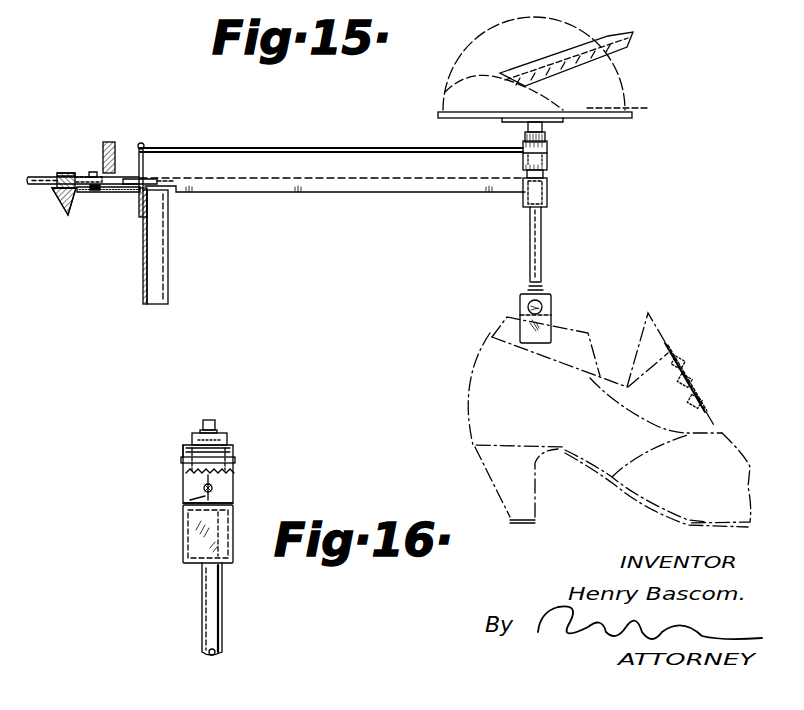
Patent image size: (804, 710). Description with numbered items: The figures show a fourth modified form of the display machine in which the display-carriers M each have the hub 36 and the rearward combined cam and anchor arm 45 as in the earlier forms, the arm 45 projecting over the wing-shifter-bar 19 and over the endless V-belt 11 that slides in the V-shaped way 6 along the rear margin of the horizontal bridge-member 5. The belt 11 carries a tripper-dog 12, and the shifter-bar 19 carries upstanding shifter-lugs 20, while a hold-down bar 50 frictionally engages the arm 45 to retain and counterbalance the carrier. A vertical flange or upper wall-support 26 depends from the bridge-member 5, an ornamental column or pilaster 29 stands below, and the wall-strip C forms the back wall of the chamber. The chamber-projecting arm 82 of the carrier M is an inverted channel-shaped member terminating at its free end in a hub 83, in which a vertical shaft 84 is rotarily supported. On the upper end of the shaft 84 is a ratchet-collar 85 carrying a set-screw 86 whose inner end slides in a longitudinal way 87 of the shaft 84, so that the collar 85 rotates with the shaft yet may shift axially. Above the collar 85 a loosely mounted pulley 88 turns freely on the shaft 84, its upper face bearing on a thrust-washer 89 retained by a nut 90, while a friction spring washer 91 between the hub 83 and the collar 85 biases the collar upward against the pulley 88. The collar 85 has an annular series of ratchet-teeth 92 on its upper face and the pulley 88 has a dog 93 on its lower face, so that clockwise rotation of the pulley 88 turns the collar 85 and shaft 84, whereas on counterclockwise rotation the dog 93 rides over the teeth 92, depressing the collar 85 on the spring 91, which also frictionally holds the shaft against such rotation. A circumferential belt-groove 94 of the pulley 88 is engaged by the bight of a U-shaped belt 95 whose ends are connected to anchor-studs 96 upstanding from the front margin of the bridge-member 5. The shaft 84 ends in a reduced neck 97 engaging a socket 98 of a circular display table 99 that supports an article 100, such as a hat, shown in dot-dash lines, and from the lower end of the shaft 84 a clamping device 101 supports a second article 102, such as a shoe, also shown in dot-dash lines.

In FIG. 15, the carrier-support or bridge-member 5 is at (122, 193).
In FIG. 15, the V-shaped way or channel 6 is at (68, 213).
In FIG. 15, the endless V-belt 11 is at (60, 196).
In FIG. 15, the dog or tripper-member 12 is at (74, 175).
In FIG. 15, the wing-shifter-bar 19 is at (96, 193).
In FIG. 15, the shifter-dog or lug 20 is at (93, 173).
In FIG. 15, the vertical flange or upper wall-support 26 is at (143, 204).
In FIG. 15, the ornamental column or pilaster 29 is at (162, 266).
In FIG. 15, the hub-portion 36 is at (155, 179).
In FIG. 15, the combined cam and anchor arm 45 is at (43, 183).
In FIG. 15, the hold-down bar or beam 50 is at (102, 152).
In FIG. 15, the chamber-projecting arm 82 is at (315, 193).
In FIG. 15, the hub 83 is at (548, 190).
In FIG. 16, the hub 83 is at (233, 525).
In FIG. 15, the vertical shaft 84 is at (539, 254).
In FIG. 16, the vertical shaft 84 is at (212, 602).
In FIG. 16, the ratchet-collar 85 is at (233, 488).
In FIG. 16, the set-screw 86 is at (205, 488).
In FIG. 16, the longitudinal way 87 is at (203, 495).
In FIG. 16, the pulley 88 is at (233, 463).
In FIG. 16, the thrust-washer 89 is at (185, 447).
In FIG. 16, the nut 90 is at (203, 431).
In FIG. 16, the friction spring washer 91 is at (235, 503).
In FIG. 16, the ratchet-teeth 92 is at (185, 478).
In FIG. 16, the dog or tooth 93 is at (213, 477).
In FIG. 16, the circumferential belt-groove 94 is at (183, 457).
In FIG. 15, the belt 95 is at (359, 147).
In FIG. 16, the belt 95 is at (182, 460).
In FIG. 15, the anchor-stud 96 is at (145, 140).
In FIG. 16, the reduced neck or portion 97 is at (212, 420).
In FIG. 15, the socket 98 is at (541, 127).
In FIG. 15, the display table or disc 99 is at (612, 118).
In FIG. 15, the article 100 is at (612, 70).
In FIG. 15, the clamping device or securing means 101 is at (547, 323).
In FIG. 15, the second article 102 is at (668, 347).
In FIG. 15, the wall-strip C is at (147, 272).
In FIG. 15, the display-carrier M is at (404, 160).